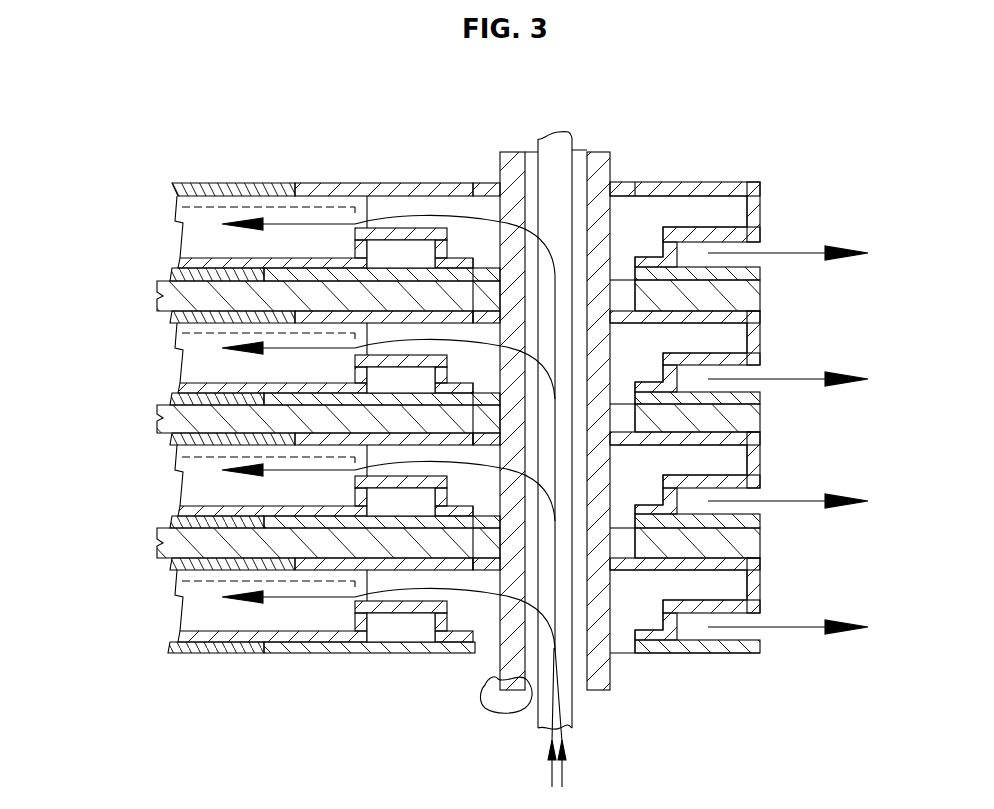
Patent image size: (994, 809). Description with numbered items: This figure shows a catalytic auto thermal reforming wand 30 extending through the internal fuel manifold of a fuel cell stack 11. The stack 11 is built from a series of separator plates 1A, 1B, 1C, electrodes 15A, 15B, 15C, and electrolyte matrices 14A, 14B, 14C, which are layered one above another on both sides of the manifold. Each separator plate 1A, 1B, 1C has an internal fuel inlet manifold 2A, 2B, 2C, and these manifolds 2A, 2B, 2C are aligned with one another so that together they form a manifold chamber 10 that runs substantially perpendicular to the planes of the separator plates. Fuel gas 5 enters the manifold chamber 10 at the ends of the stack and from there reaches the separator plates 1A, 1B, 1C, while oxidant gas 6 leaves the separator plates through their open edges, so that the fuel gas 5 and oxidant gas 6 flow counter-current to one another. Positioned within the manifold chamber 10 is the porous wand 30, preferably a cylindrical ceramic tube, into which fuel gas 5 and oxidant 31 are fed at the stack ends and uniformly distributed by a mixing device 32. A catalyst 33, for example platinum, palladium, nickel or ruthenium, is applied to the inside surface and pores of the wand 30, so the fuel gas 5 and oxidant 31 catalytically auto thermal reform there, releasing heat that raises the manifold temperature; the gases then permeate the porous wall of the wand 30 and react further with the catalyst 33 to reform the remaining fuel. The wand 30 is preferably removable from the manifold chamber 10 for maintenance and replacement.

The manifold chamber 10 is at (548, 407).
The fuel cell stack 11 is at (716, 114).
The separator plate 1A is at (739, 243).
The separator plate 1B is at (739, 373).
The separator plate 1C is at (739, 501).
The internal fuel inlet manifold 2A is at (652, 229).
The internal fuel inlet manifold 2B is at (650, 356).
The internal fuel inlet manifold 2C is at (652, 479).
The electrolyte matrix 14A is at (157, 301).
The electrolyte matrix 14B is at (157, 425).
The electrolyte matrix 14C is at (157, 549).
The electrode 15A is at (176, 188).
The electrode 15B is at (176, 314).
The electrode 15C is at (176, 436).
The porous catalytic auto thermal reforming wand 30 is at (613, 670).
The oxidant 31 is at (564, 771).
The mixing device 32 is at (577, 710).
The catalyst 33 is at (484, 706).
The fuel gas 5 is at (552, 771).
The oxidant gas 6 is at (790, 631).